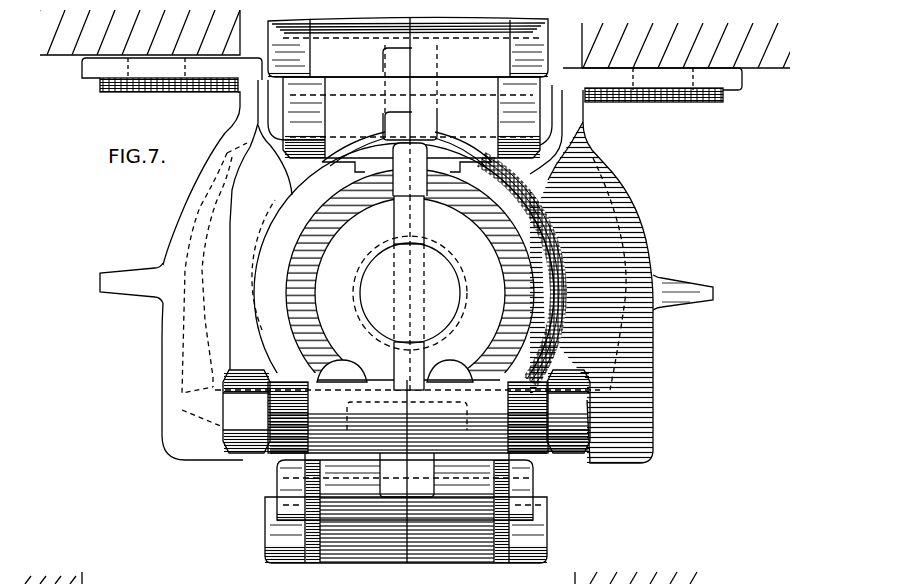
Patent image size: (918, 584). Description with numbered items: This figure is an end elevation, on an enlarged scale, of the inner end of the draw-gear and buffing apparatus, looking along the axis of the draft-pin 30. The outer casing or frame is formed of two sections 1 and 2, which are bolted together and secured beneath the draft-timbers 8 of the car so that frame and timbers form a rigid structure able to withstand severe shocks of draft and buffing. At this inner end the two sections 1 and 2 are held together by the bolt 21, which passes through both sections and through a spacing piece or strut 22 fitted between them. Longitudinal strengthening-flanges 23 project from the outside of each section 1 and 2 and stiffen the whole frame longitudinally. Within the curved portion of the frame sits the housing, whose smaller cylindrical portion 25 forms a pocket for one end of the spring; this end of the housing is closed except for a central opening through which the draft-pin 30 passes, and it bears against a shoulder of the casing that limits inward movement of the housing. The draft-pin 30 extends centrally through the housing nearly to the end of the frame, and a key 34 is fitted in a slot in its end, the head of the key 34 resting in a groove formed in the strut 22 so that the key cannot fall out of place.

The casing section 1 is at (163, 357).
The casing section 2 is at (656, 357).
The draft-timbers 8 is at (412, 39).
The bolt 21 is at (406, 411).
The spacing piece or strut 22 is at (428, 471).
The longitudinal strengthening-flanges 23 is at (716, 296).
The smaller cylindrical portion of housing 25 is at (424, 168).
The draft-pin 30 is at (410, 293).
The key 34 is at (396, 218).